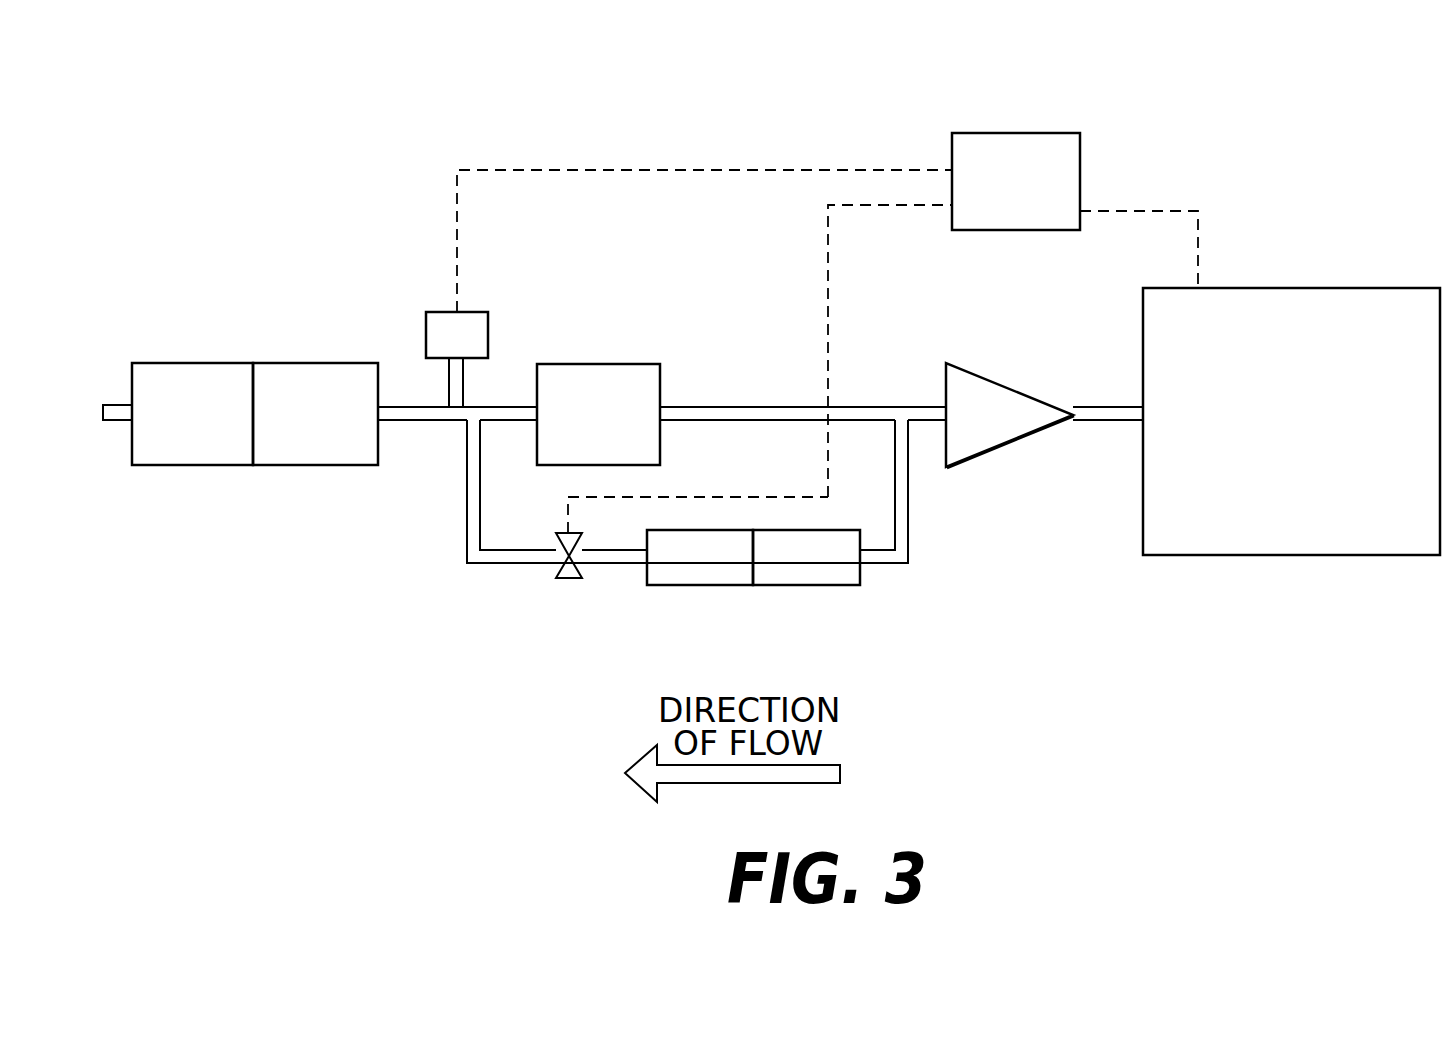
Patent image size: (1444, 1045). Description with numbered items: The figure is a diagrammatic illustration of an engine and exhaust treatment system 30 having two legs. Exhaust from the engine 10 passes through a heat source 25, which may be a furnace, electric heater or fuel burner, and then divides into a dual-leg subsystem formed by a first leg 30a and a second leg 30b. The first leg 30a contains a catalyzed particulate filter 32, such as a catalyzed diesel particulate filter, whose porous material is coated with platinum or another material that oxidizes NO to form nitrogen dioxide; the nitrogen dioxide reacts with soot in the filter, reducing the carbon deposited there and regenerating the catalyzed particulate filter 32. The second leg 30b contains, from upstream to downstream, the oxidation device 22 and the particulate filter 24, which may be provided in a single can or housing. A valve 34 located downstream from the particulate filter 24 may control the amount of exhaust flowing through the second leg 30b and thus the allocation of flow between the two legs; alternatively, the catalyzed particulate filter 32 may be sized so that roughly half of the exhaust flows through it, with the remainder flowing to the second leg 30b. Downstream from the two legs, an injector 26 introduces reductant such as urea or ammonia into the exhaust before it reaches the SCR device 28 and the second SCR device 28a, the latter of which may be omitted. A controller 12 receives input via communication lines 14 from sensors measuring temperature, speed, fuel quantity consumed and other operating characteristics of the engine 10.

The engine 10 is at (1277, 288).
The controller 12 is at (1080, 146).
The communication lines 14 is at (595, 168).
The oxidation device 22 is at (803, 584).
The particulate filter 24 is at (703, 584).
The heat source 25 is at (1005, 385).
The injector 26 is at (481, 312).
The SCR device 28 is at (312, 363).
The second SCR device 28a is at (190, 363).
The exhaust treatment system 30 is at (317, 230).
The first leg 30a is at (571, 307).
The second leg 30b is at (1022, 657).
The catalyzed particulate filter 32 is at (620, 364).
The valve 34 is at (575, 582).